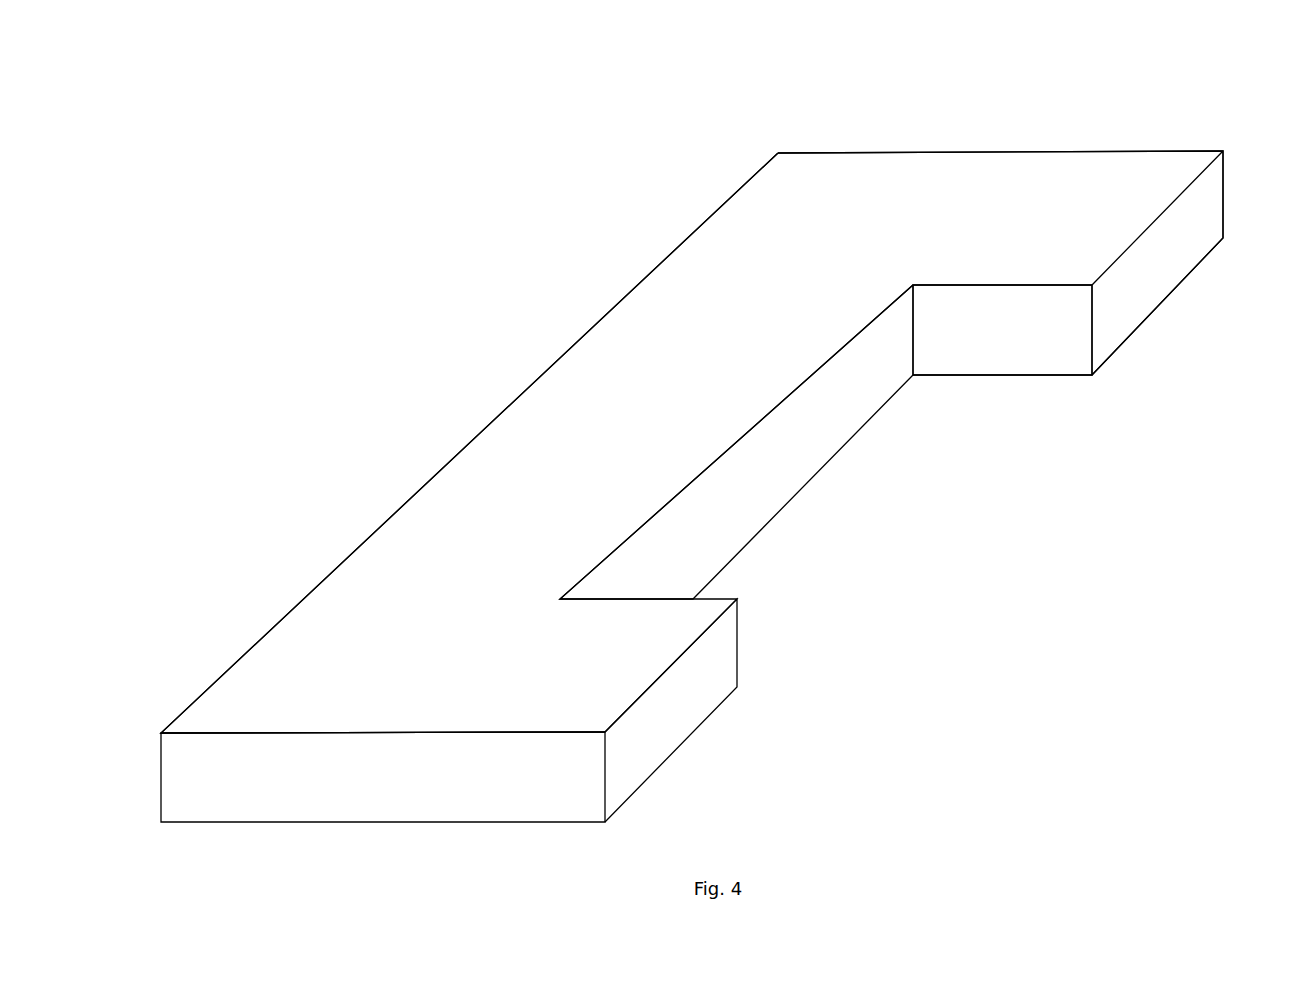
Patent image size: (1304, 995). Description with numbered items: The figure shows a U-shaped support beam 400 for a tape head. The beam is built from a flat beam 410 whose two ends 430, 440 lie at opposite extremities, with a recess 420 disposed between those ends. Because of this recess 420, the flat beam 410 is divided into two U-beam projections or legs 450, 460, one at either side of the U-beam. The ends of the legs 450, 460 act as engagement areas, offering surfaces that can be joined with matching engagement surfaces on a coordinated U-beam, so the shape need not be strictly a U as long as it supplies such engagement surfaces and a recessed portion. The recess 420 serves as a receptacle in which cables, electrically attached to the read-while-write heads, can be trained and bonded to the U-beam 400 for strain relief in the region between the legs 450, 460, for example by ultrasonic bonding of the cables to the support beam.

The U-shaped support beam 400 is at (388, 187).
The flat beam 410 is at (448, 533).
The recess 420 is at (802, 454).
The end 430 is at (372, 787).
The end 440 is at (957, 151).
The U-beam projection or leg 450 is at (1047, 318).
The U-beam projection or leg 460 is at (615, 665).